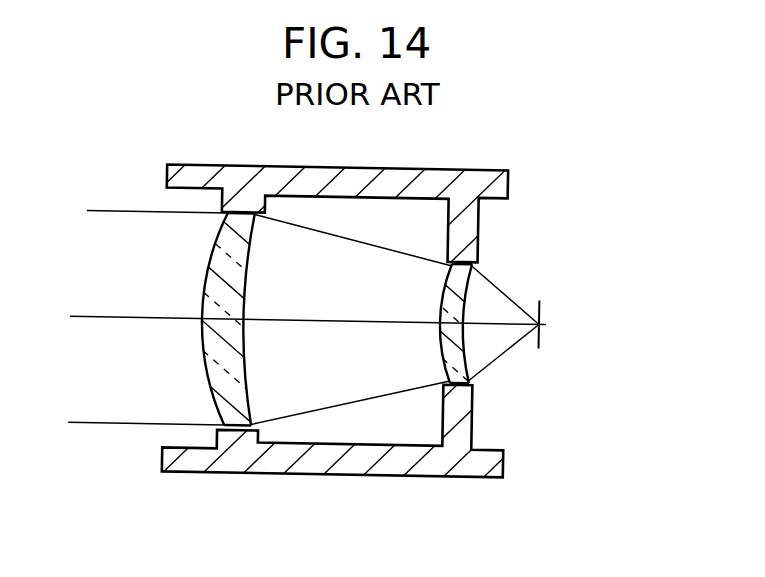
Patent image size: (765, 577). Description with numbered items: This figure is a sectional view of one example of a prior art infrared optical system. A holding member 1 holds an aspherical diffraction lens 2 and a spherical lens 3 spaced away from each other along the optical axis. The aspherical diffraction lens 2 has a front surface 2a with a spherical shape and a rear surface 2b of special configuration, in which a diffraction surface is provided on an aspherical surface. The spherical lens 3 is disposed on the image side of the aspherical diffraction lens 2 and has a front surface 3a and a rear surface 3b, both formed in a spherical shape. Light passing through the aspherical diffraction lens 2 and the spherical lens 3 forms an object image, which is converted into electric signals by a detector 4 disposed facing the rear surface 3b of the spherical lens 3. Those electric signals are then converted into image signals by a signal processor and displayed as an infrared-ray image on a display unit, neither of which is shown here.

The holding member 1 is at (505, 180).
The aspherical diffraction lens 2 is at (231, 380).
The front surface 2a is at (202, 305).
The rear surface 2b is at (247, 341).
The spherical lens 3 is at (468, 348).
The front surface 3a is at (440, 295).
The rear surface 3b is at (472, 288).
The detector 4 is at (545, 326).